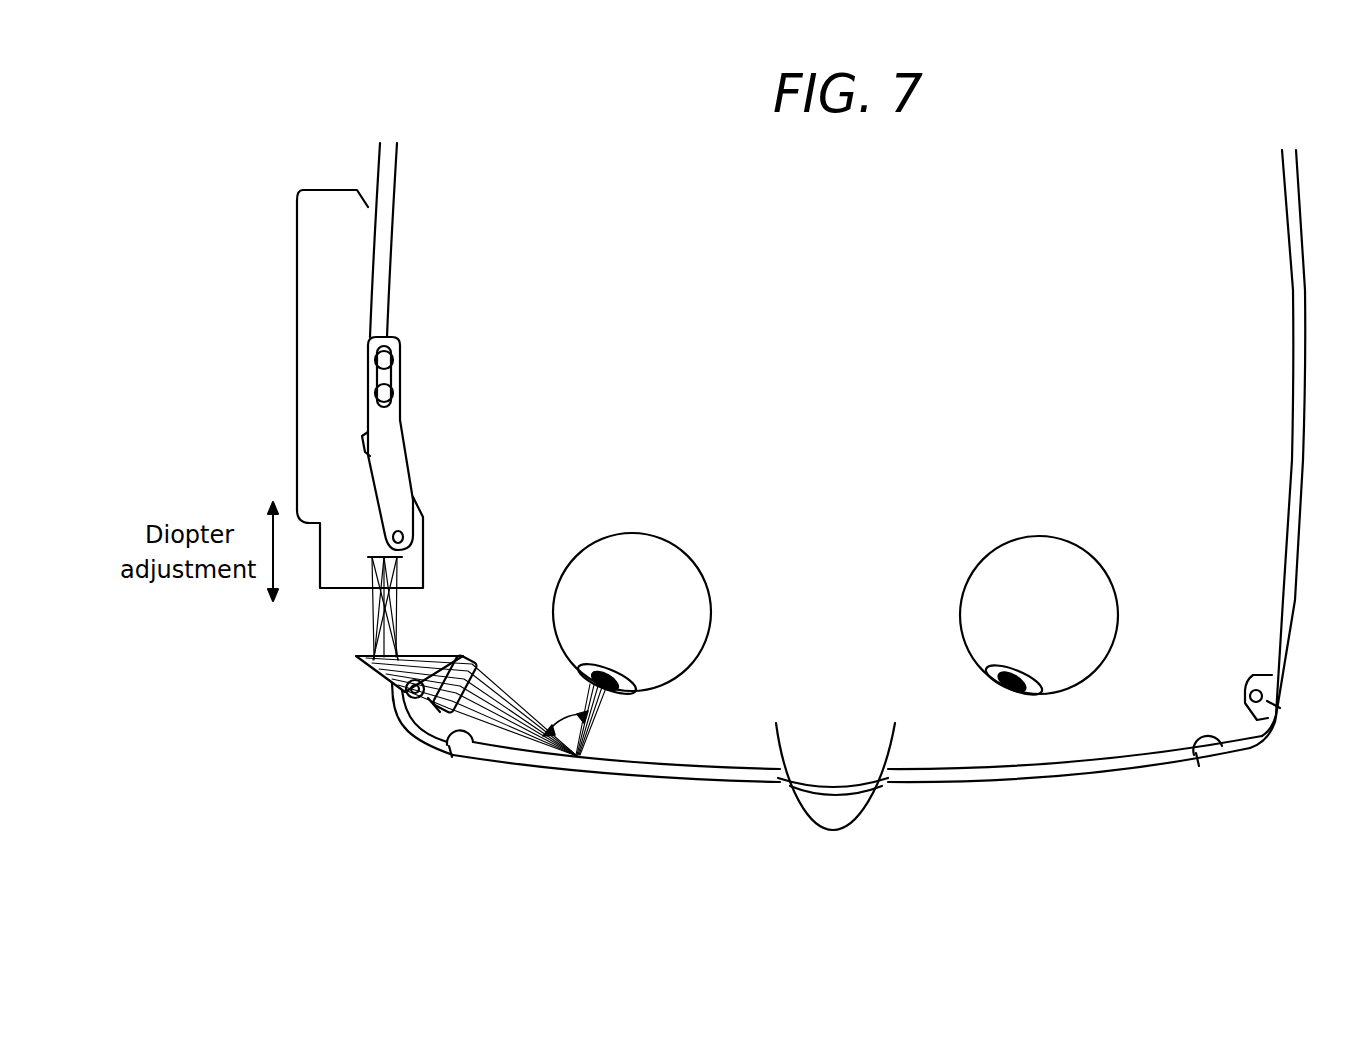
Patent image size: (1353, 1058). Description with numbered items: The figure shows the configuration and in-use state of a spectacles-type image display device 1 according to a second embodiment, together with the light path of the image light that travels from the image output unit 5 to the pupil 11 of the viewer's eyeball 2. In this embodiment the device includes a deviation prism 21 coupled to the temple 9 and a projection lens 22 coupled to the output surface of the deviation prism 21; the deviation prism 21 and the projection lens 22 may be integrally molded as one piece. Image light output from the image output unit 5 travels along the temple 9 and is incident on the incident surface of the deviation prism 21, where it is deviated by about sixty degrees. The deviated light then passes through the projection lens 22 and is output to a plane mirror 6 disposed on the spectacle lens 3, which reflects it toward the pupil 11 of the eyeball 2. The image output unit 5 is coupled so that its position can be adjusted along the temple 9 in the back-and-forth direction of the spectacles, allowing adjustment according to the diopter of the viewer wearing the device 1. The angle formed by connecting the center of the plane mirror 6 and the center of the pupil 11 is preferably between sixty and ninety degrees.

The spectacles-type image display device 1 is at (491, 845).
The eyeball 2 is at (640, 545).
The spectacle lens 3 is at (741, 780).
The image output unit 5 is at (338, 420).
The plane mirror 6 is at (578, 762).
The temple 9 is at (380, 278).
The pupil 11 is at (640, 672).
The deviation prism 21 is at (375, 663).
The projection lens 22 is at (432, 720).